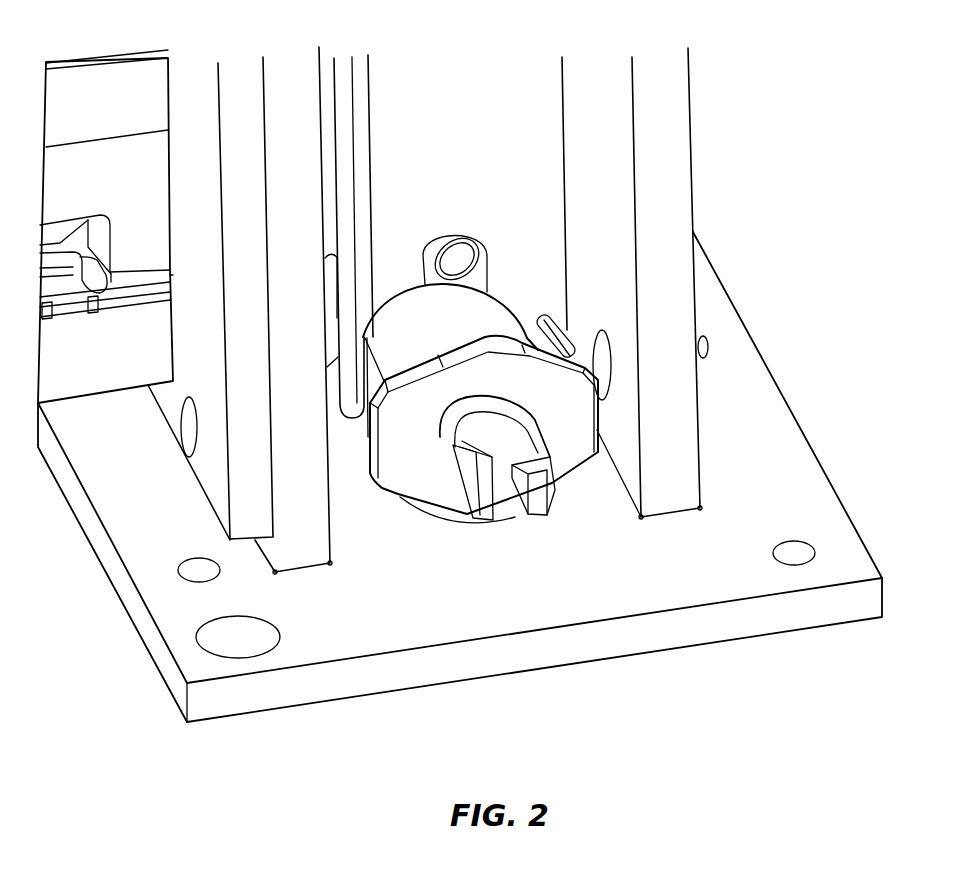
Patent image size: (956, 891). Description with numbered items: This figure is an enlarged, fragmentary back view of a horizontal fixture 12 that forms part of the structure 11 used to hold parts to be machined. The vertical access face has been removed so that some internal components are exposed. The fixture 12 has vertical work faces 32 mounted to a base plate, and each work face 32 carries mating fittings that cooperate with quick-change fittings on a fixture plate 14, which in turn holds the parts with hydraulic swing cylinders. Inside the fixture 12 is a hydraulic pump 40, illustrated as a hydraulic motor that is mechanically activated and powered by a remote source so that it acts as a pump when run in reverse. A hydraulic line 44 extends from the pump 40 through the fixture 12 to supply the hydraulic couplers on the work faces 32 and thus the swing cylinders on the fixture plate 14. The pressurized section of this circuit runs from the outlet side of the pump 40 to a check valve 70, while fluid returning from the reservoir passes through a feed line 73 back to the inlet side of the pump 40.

The structure 11 is at (810, 432).
The fixture 12 is at (733, 353).
The fixture plate 14 is at (170, 396).
The work face 32 is at (692, 128).
The hydraulic pump 40 is at (492, 312).
The hydraulic line 44 is at (540, 317).
The check valve 70 is at (567, 327).
The feed line 73 is at (346, 148).